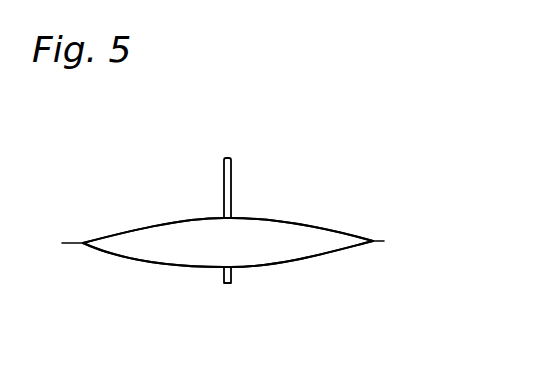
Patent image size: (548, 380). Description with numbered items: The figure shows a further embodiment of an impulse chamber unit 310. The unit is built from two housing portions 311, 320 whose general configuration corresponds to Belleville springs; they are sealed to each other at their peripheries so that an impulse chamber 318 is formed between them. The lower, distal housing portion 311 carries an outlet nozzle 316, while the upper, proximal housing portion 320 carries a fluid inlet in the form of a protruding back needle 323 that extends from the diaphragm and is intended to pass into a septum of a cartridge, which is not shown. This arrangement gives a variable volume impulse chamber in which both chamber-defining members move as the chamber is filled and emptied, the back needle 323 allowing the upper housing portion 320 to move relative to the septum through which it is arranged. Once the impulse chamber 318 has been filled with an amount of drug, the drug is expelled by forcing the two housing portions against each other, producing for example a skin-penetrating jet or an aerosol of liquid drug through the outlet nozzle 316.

The impulse chamber unit 310 is at (362, 155).
The lower housing portion 311 is at (272, 265).
The outlet nozzle 316 is at (230, 283).
The impulse chamber 318 is at (183, 247).
The upper housing portion 320 is at (338, 232).
The back needle 323 is at (224, 182).